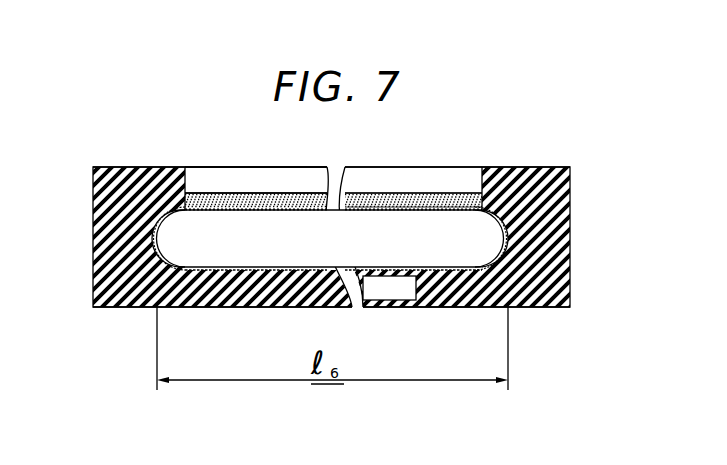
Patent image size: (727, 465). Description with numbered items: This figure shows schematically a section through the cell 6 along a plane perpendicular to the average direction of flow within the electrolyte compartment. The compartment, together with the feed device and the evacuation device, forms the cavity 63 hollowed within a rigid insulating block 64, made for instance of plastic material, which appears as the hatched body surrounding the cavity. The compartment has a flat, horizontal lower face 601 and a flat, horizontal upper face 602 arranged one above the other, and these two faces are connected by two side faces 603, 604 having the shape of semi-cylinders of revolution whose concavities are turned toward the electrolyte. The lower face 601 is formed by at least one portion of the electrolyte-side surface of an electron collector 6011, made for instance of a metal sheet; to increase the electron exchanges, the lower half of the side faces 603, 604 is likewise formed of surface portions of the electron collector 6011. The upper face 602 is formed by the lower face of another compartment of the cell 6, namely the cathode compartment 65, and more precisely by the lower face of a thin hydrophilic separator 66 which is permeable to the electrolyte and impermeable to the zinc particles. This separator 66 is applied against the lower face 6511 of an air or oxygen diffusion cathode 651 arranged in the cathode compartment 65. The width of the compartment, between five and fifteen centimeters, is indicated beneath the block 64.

The cell 6 is at (588, 175).
The cavity 63 is at (283, 238).
The rigid insulating block 64 is at (545, 167).
The cathode compartment 65 is at (424, 167).
The hydrophilic separator 66 is at (375, 203).
The lower face 601 is at (274, 268).
The upper face 602 is at (428, 211).
The side face 603 is at (160, 256).
The side face 604 is at (505, 252).
The air or oxygen diffusion cathode 651 is at (452, 198).
The electron collector 6011 is at (413, 300).
The lower face of the cathode 6511 is at (243, 201).